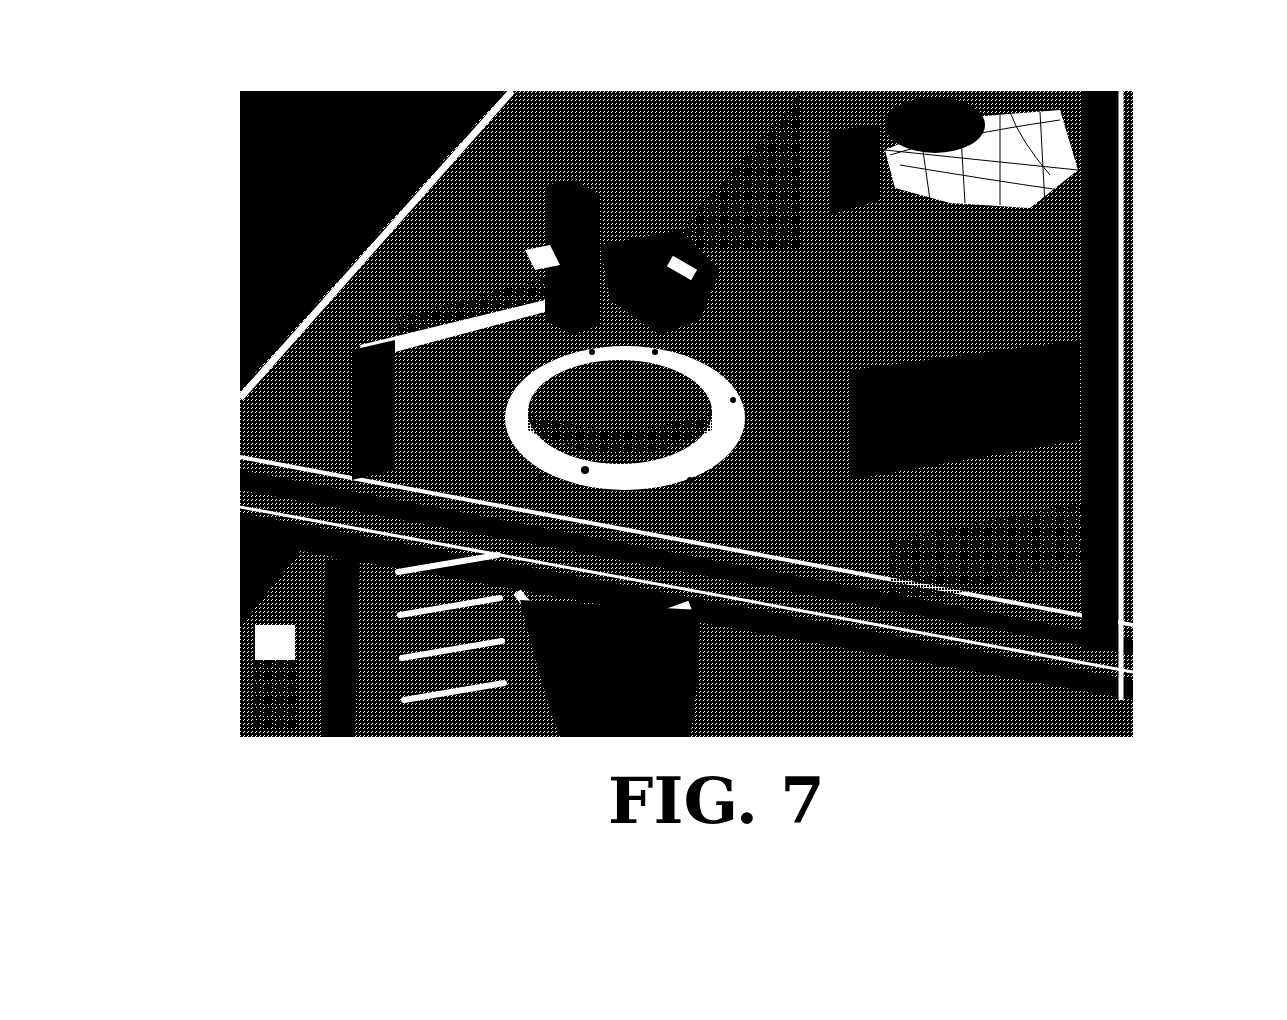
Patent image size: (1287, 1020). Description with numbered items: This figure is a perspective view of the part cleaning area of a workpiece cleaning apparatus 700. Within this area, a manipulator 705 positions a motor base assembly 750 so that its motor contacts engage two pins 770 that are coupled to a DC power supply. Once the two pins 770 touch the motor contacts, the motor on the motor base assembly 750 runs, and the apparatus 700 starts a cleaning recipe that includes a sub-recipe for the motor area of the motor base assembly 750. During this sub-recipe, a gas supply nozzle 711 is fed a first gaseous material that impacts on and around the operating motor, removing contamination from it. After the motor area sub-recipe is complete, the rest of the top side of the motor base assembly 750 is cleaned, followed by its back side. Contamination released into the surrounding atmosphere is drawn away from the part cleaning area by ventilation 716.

The workpiece cleaning apparatus 700 is at (700, 73).
The manipulator 705 is at (1010, 120).
The gas supply nozzle 711 is at (647, 273).
The ventilation 716 is at (513, 387).
The motor base assembly 750 is at (565, 215).
The pins 770 is at (457, 293).